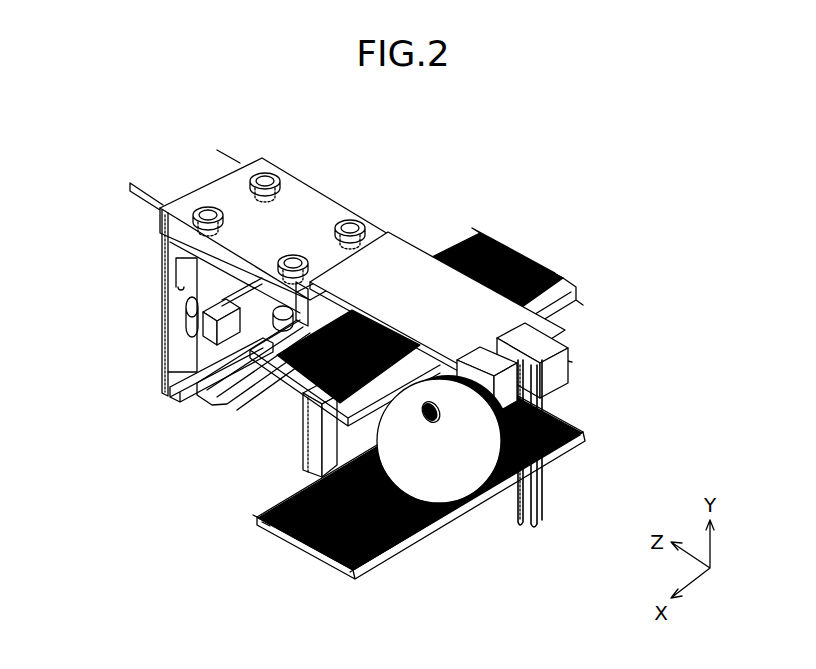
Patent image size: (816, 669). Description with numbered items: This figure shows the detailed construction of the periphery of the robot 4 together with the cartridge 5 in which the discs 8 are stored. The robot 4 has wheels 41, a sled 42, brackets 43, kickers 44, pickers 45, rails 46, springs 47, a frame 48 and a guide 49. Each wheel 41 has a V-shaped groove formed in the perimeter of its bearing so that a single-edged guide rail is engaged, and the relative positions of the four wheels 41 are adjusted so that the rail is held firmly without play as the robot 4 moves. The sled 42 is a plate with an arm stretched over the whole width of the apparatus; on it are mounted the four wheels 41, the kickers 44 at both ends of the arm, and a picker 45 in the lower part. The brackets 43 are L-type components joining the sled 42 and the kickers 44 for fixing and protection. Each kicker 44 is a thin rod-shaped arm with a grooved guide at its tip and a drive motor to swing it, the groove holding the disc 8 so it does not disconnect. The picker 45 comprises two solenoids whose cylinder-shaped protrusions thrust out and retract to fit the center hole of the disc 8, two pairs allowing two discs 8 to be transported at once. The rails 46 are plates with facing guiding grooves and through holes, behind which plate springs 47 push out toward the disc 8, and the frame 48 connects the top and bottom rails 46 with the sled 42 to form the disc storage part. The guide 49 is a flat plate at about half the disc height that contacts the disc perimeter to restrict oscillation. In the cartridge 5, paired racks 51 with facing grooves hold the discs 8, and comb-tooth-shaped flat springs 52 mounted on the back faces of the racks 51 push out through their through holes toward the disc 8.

The robot 4 is at (478, 119).
The cartridge 5 is at (634, 171).
The disc 8 is at (482, 473).
The wheel 41 is at (210, 212).
The sled 42 is at (402, 258).
The bracket 43 is at (566, 378).
The kicker 44 is at (518, 530).
The picker 45 is at (192, 327).
The rail 46 is at (198, 257).
The spring 47 is at (248, 404).
The frame 48 is at (168, 372).
The guide 49 is at (240, 403).
The rack 51 is at (268, 526).
The spring 52 is at (293, 537).